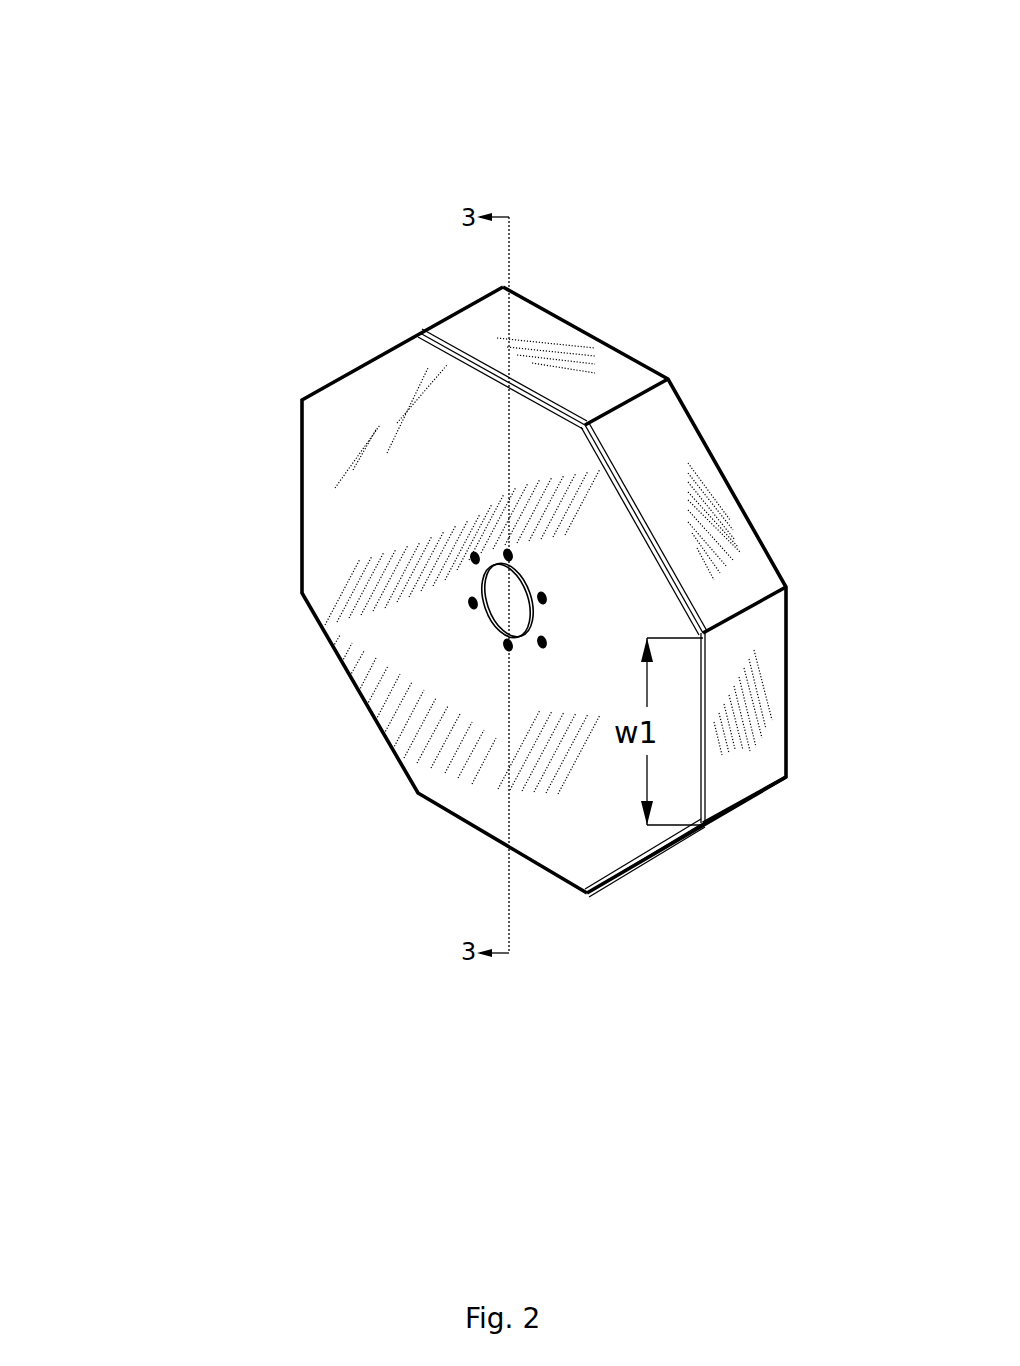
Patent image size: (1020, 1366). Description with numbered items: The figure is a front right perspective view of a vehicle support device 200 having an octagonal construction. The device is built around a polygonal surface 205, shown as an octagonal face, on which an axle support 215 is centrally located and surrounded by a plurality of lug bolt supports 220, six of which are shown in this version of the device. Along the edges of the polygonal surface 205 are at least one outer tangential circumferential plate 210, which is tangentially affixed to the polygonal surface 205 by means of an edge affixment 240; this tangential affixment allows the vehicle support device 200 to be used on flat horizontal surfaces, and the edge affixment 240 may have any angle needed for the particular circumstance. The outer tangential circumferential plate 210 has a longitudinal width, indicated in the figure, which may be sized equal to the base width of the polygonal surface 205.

The vehicle support device 200 is at (158, 50).
The polygonal surface 205 is at (504, 592).
The outer tangential circumferential plate 210 is at (685, 506).
The axle support 215 is at (468, 573).
The lug bolt supports 220 is at (448, 617).
The edge affixment 240 is at (722, 694).